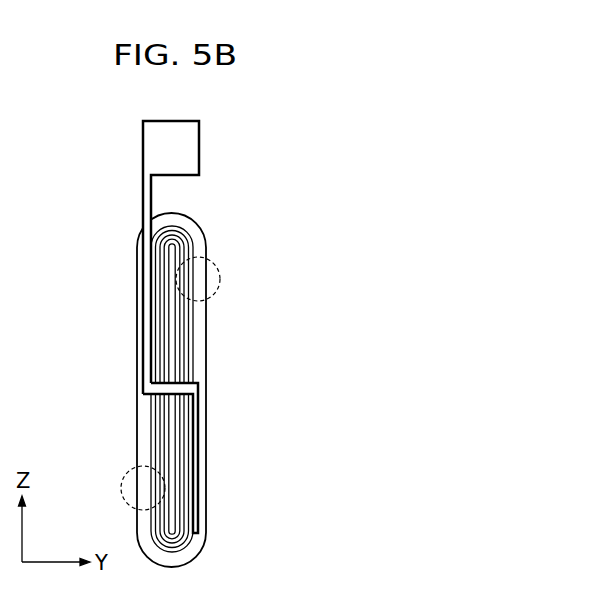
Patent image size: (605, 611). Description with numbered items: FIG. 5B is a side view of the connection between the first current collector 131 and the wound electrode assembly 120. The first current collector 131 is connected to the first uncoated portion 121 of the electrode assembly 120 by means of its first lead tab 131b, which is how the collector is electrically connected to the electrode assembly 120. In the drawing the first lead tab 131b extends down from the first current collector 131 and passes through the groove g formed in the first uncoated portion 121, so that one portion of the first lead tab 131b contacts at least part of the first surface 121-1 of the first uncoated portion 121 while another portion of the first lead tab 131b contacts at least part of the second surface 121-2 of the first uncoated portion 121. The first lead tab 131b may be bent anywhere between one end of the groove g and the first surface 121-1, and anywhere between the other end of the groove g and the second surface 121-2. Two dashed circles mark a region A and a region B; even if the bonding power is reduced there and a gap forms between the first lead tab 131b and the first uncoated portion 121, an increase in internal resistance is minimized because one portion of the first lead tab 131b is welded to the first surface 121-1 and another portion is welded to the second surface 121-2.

The electrode assembly 120 is at (207, 243).
The first uncoated portion 121 is at (176, 389).
The first surface of the first uncoated portion 121-1 is at (150, 436).
The second surface of the first uncoated portion 121-2 is at (193, 361).
The first current collector 131 is at (130, 326).
The first lead tab 131b is at (150, 362).
The groove g is at (175, 400).
The region A is at (220, 277).
The region B is at (121, 489).